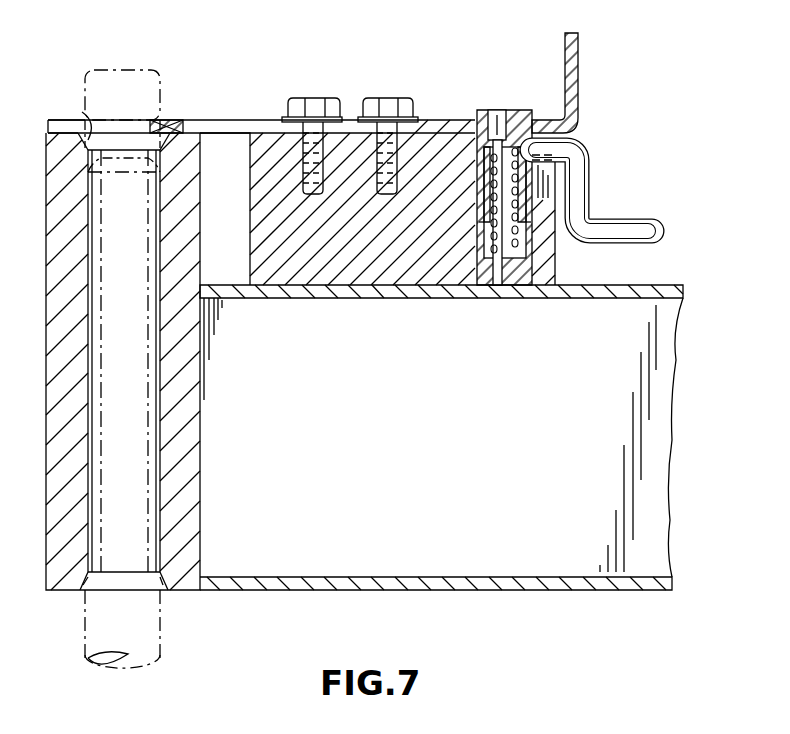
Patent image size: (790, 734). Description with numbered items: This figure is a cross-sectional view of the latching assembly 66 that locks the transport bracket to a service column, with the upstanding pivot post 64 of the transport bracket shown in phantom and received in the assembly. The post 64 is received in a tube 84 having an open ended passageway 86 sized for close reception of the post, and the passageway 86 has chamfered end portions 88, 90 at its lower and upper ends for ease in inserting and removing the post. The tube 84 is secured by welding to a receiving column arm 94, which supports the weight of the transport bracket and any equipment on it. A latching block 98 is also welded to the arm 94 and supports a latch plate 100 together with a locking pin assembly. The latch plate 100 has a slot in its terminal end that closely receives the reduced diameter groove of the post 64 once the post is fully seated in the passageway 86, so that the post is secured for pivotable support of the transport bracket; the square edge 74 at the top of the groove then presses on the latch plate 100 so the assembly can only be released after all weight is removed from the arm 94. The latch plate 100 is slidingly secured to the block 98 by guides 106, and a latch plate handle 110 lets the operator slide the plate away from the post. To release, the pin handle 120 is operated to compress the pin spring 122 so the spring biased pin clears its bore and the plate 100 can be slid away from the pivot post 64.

The post 64 is at (128, 88).
The latching assembly 66 is at (377, 196).
The square edge 74 is at (168, 124).
The tube 84 is at (190, 428).
The passageway 86 is at (90, 347).
The chamfered end portion 88 is at (84, 588).
The chamfered end portion 90 is at (88, 118).
The receiving column arm 94 is at (400, 298).
The latching block 98 is at (300, 272).
The latch plate 100 is at (208, 125).
The guides 106 is at (318, 97).
The latch plate handle 110 is at (578, 80).
The pin handle 120 is at (610, 225).
The pin spring 122 is at (515, 237).